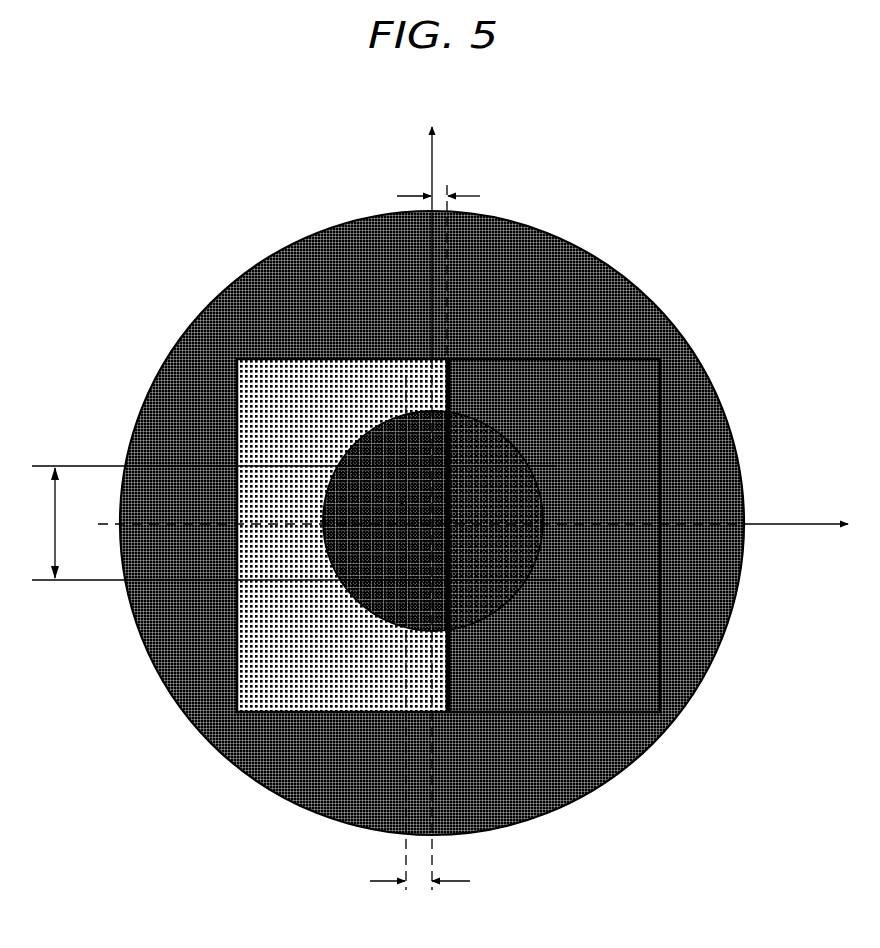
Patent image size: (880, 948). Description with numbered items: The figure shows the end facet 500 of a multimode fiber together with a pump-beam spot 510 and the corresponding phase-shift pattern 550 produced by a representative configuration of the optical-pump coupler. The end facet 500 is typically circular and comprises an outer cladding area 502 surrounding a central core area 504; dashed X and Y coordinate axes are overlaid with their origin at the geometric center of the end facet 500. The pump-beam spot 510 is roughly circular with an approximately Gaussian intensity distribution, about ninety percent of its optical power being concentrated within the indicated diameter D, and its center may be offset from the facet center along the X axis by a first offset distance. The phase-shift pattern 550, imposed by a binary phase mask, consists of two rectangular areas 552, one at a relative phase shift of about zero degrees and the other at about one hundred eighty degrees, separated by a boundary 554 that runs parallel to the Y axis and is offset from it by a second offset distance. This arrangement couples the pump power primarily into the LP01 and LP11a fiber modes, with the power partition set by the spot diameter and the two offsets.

The end facet 500 is at (652, 160).
The cladding area 502 is at (630, 318).
The core area 504 is at (523, 508).
The pump-beam spot 510 is at (401, 504).
The phase-shift pattern 550 is at (299, 717).
The areas of the phase-shift pattern 552 is at (513, 377).
The boundary 554 is at (456, 395).